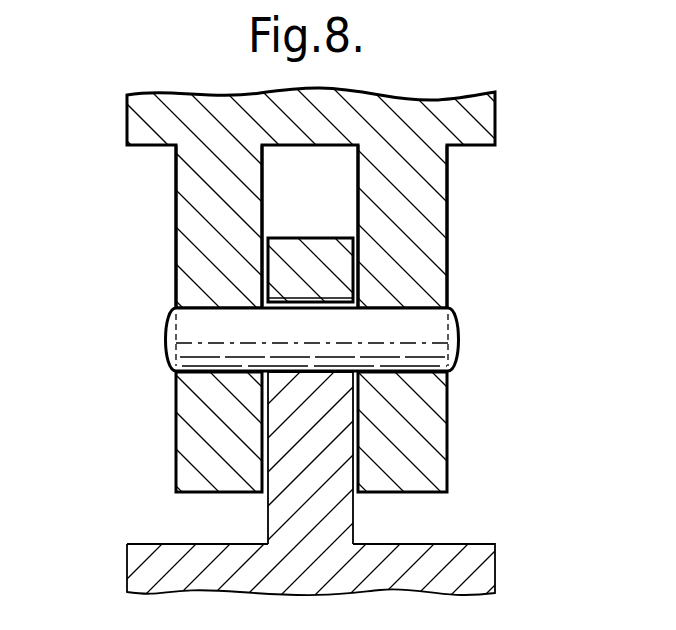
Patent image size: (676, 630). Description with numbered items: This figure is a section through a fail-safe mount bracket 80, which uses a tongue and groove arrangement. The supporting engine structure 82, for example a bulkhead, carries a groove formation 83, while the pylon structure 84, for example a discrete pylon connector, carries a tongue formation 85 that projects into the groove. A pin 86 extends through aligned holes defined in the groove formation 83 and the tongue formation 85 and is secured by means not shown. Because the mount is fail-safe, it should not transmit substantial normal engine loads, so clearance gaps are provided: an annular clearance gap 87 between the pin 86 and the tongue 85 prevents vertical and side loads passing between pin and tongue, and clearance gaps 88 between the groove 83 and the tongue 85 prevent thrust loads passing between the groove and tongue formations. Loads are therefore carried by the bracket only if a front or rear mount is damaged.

The mount bracket 80 is at (101, 149).
The supporting engine structure 82 is at (480, 124).
The groove formation 83 is at (213, 202).
The pylon structure 84 is at (152, 567).
The tongue formation 85 is at (275, 443).
The pin 86 is at (433, 330).
The clearance gap 87 is at (331, 372).
The clearance gaps 88 is at (265, 258).